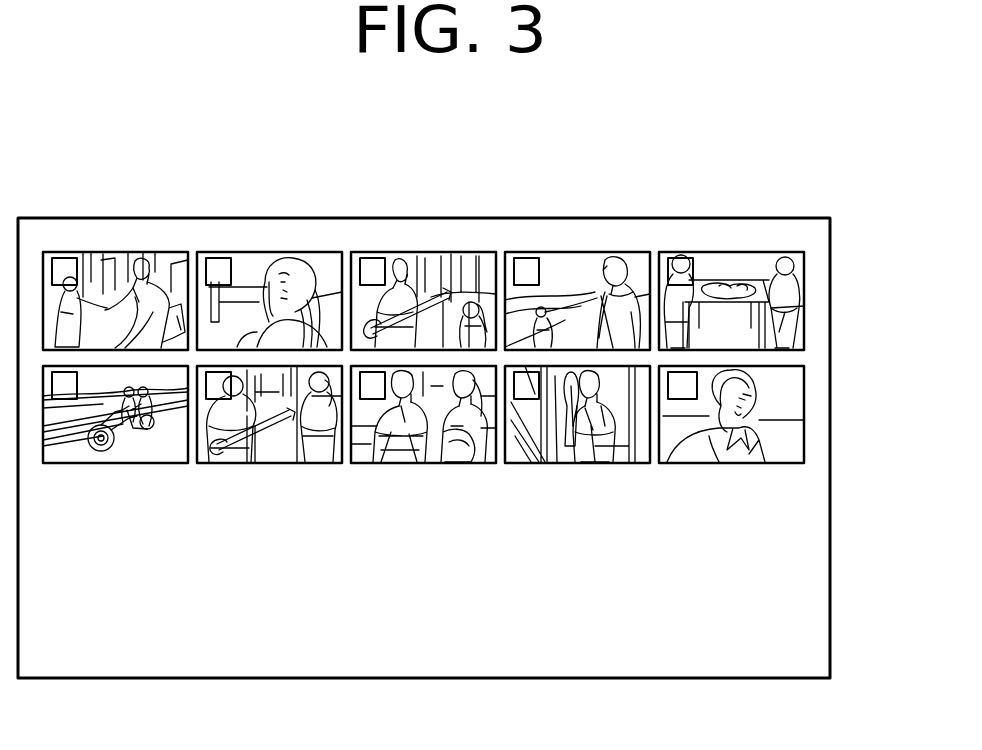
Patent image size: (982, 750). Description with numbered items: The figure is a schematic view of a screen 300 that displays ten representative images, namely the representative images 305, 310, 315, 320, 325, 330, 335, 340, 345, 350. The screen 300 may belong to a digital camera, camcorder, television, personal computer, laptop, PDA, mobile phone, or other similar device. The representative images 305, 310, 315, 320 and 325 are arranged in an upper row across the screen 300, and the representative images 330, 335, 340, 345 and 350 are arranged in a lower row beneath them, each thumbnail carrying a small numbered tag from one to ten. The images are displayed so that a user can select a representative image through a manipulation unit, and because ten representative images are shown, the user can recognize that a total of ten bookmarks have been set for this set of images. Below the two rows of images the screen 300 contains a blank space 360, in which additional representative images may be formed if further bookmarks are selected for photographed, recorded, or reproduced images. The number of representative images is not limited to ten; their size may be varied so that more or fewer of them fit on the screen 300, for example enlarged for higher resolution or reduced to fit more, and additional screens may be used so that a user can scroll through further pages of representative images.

The screen 300 is at (831, 304).
The representative image 305 is at (130, 252).
The representative image 310 is at (284, 252).
The representative image 315 is at (440, 252).
The representative image 320 is at (593, 252).
The representative image 325 is at (747, 252).
The representative image 330 is at (130, 464).
The representative image 335 is at (284, 464).
The representative image 340 is at (440, 464).
The representative image 345 is at (593, 464).
The representative image 350 is at (747, 464).
The blank space 360 is at (455, 637).